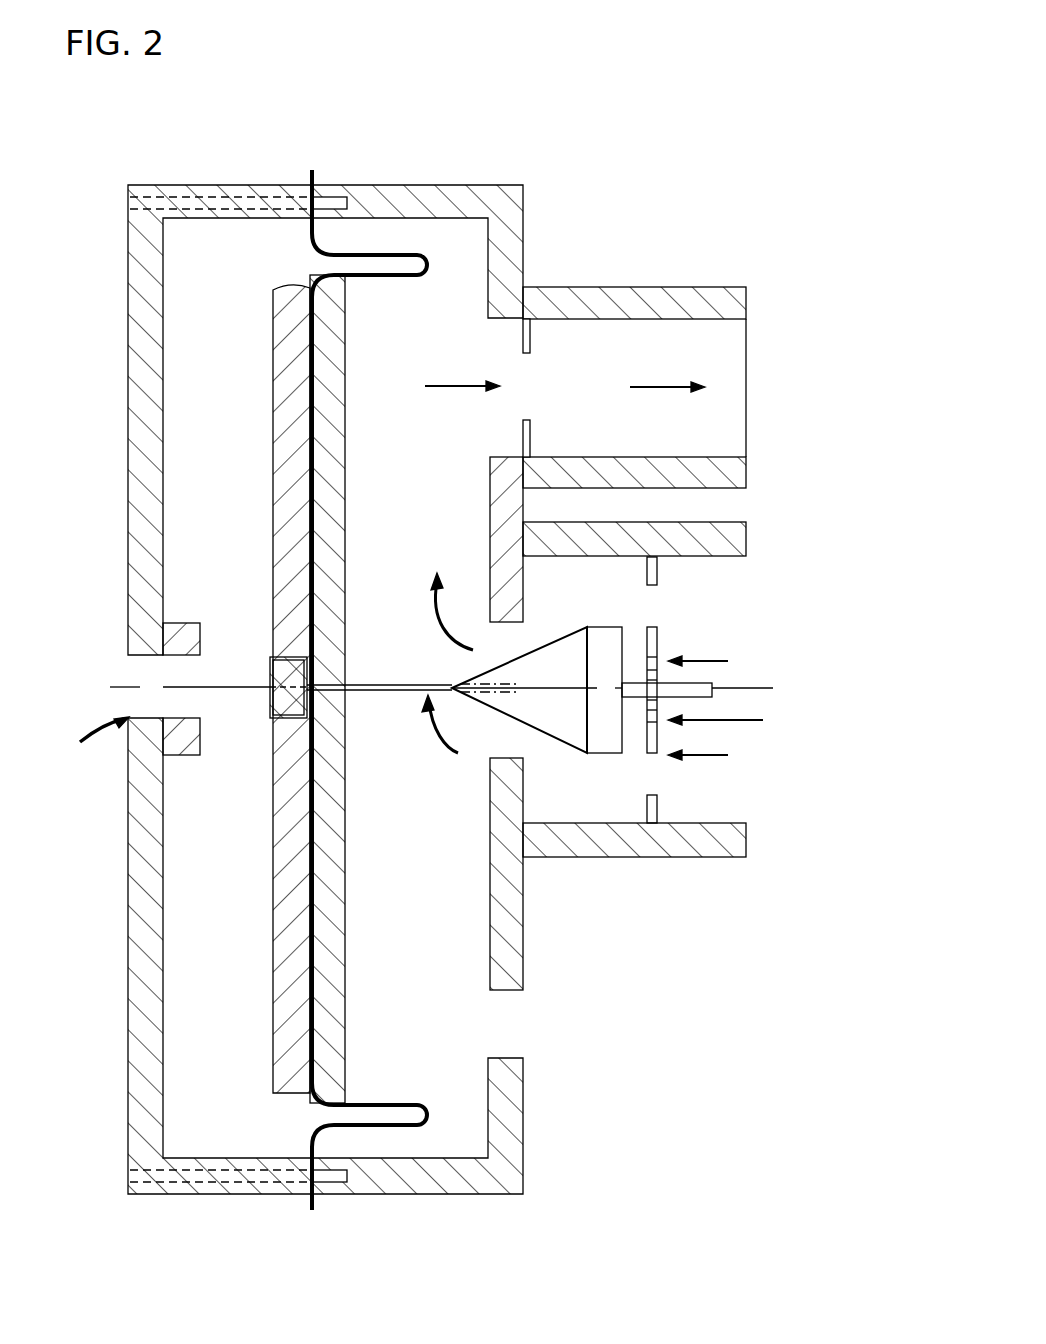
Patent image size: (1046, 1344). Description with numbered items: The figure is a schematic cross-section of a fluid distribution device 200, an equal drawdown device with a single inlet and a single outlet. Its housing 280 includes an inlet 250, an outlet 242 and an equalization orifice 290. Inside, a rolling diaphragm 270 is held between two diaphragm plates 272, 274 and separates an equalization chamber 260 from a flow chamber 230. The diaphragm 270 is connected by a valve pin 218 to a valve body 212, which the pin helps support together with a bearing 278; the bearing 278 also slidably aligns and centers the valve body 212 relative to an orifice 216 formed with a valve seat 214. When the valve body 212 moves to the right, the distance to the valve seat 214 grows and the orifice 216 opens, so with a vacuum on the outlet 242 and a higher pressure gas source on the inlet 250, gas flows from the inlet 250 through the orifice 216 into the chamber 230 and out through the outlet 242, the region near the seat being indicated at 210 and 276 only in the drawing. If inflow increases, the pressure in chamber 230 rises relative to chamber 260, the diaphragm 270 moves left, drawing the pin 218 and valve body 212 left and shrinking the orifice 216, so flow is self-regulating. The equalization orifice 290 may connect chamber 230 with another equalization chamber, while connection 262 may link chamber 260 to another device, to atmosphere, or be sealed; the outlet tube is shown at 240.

The fluid distribution device 200 is at (705, 187).
The ion source region 210 is at (573, 785).
The valve body 212 is at (558, 657).
The valve seat 214 is at (523, 603).
The orifice 216 is at (516, 749).
The valve pin 218 is at (288, 702).
The chamber 230 is at (427, 910).
The exhaust tube 240 is at (682, 302).
The outlet 242 is at (551, 396).
The inlet 250 is at (758, 658).
The equalization chamber 260 is at (237, 872).
The orifice 262 is at (155, 692).
The rolling diaphragm 270 is at (412, 258).
The diaphragm plate 272 is at (285, 330).
The diaphragm plate 274 is at (347, 332).
The gas flow into aperture 276 is at (163, 783).
The bearing 278 is at (660, 704).
The housing 280 is at (145, 1072).
The equalization orifice 290 is at (516, 1034).